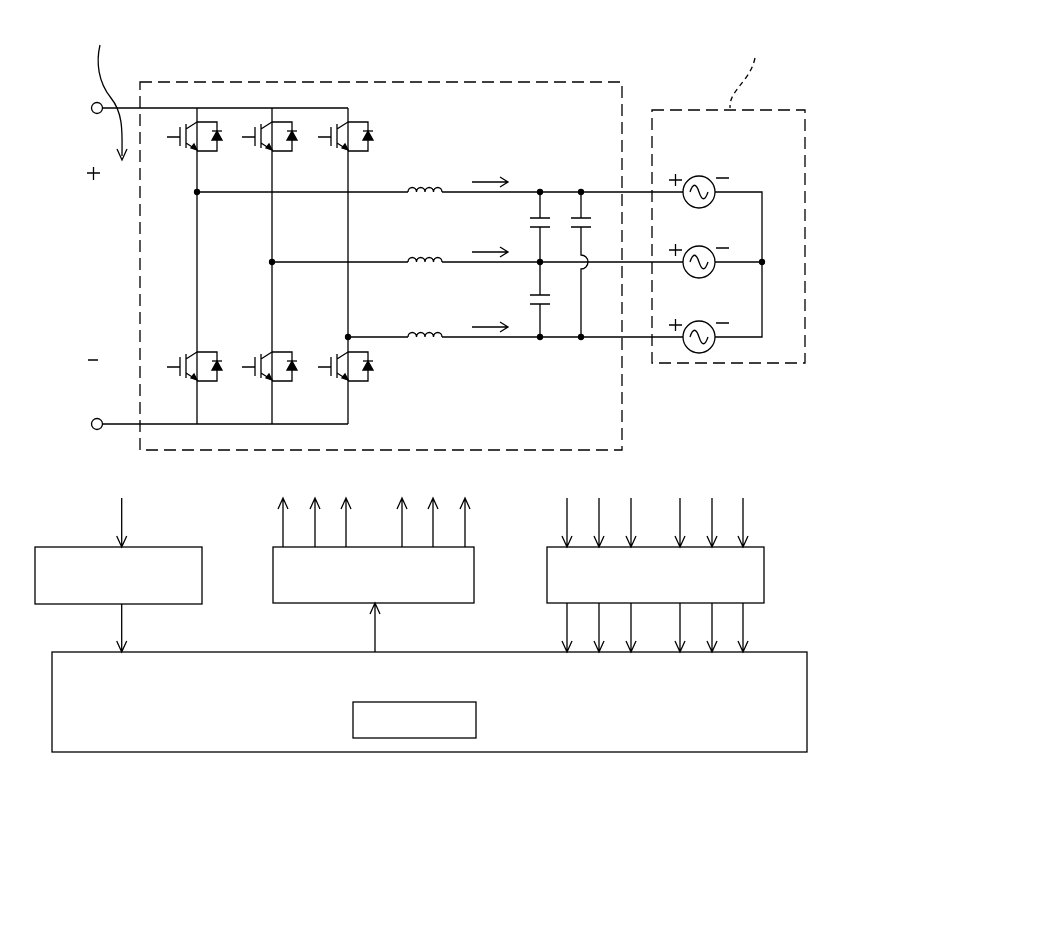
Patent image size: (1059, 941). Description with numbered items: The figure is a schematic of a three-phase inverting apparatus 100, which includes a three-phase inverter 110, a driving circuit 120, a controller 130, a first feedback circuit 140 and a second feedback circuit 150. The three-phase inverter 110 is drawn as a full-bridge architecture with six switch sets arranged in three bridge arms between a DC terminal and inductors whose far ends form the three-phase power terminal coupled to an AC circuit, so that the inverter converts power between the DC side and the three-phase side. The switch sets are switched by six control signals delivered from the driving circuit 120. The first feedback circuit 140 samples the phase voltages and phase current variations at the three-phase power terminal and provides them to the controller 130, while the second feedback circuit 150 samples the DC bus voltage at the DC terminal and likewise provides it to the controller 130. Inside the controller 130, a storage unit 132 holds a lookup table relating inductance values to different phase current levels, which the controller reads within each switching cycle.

The three-phase inverting apparatus 100 is at (825, 800).
The three-phase inverter 110 is at (557, 82).
The driving circuit 120 is at (474, 575).
The controller 130 is at (767, 650).
The storage unit 132 is at (476, 720).
The first feedback circuit 140 is at (764, 575).
The second feedback circuit 150 is at (203, 575).